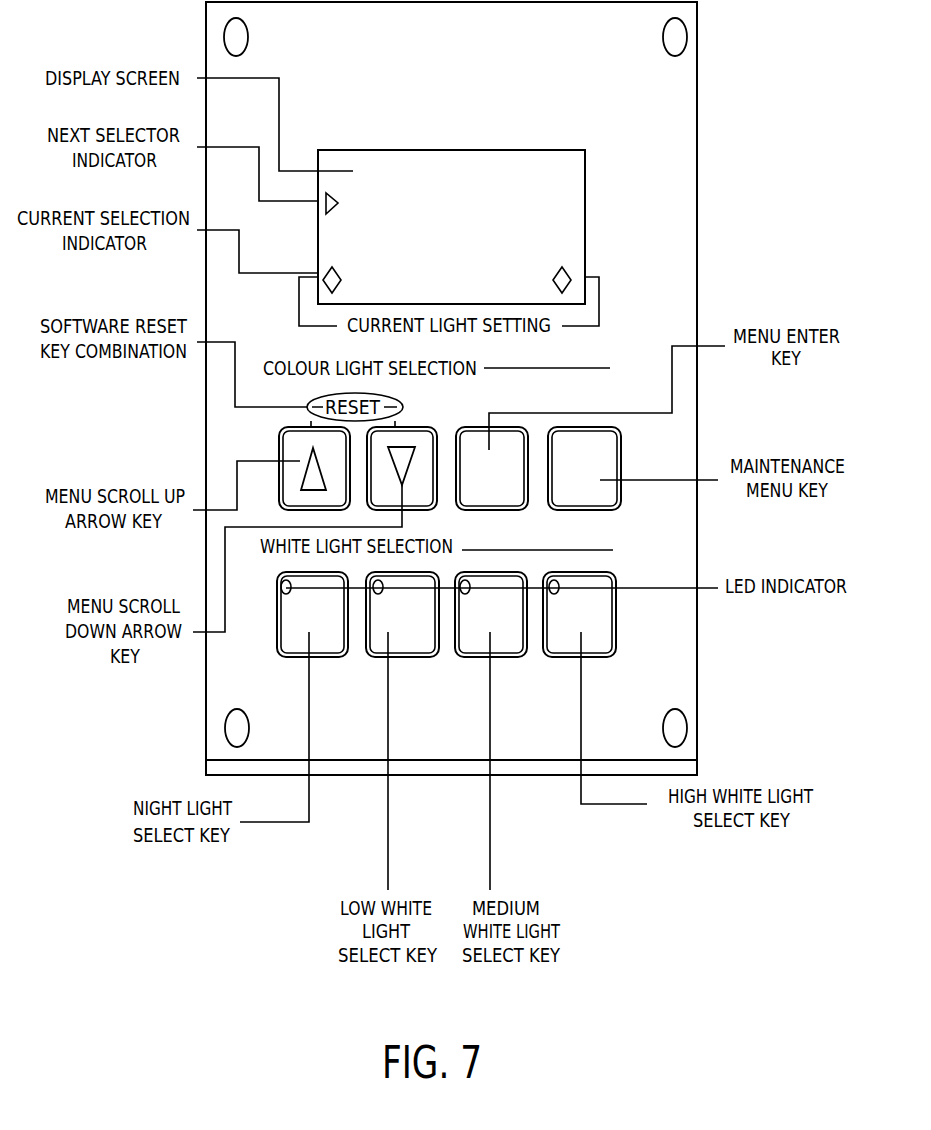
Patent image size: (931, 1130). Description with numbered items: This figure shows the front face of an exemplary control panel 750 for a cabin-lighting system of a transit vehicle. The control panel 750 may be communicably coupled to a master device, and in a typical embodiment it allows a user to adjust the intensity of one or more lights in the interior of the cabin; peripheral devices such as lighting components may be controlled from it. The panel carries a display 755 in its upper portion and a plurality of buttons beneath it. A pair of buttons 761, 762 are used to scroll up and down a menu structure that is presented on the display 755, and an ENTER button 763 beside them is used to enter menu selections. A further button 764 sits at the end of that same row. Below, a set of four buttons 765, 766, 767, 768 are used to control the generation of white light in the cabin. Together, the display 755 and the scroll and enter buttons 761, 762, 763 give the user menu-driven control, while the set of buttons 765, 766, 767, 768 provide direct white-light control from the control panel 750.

The control panel 750 is at (698, 170).
The display 755 is at (582, 218).
The scroll button 761 is at (286, 448).
The scroll button 762 is at (425, 440).
The ENTER button 763 is at (495, 498).
The button 764 is at (608, 498).
The white light control button 765 is at (319, 643).
The white light control button 766 is at (420, 643).
The white light control button 767 is at (510, 643).
The white light control button 768 is at (600, 643).